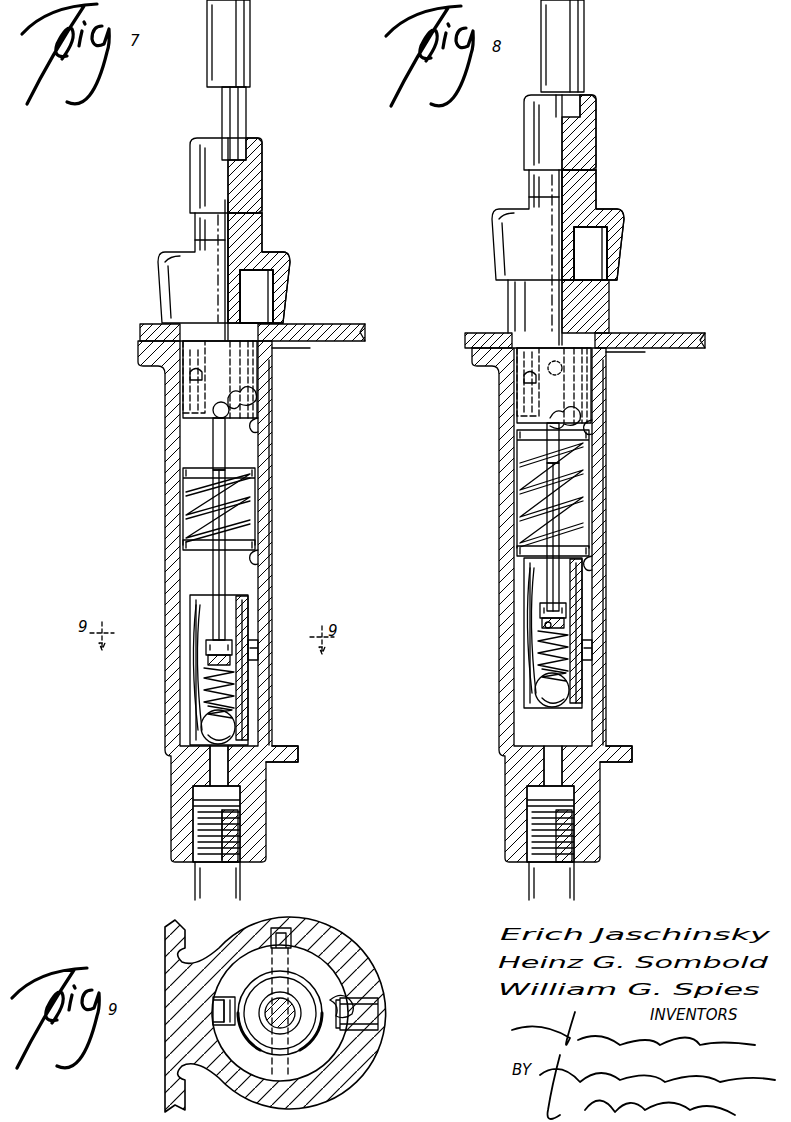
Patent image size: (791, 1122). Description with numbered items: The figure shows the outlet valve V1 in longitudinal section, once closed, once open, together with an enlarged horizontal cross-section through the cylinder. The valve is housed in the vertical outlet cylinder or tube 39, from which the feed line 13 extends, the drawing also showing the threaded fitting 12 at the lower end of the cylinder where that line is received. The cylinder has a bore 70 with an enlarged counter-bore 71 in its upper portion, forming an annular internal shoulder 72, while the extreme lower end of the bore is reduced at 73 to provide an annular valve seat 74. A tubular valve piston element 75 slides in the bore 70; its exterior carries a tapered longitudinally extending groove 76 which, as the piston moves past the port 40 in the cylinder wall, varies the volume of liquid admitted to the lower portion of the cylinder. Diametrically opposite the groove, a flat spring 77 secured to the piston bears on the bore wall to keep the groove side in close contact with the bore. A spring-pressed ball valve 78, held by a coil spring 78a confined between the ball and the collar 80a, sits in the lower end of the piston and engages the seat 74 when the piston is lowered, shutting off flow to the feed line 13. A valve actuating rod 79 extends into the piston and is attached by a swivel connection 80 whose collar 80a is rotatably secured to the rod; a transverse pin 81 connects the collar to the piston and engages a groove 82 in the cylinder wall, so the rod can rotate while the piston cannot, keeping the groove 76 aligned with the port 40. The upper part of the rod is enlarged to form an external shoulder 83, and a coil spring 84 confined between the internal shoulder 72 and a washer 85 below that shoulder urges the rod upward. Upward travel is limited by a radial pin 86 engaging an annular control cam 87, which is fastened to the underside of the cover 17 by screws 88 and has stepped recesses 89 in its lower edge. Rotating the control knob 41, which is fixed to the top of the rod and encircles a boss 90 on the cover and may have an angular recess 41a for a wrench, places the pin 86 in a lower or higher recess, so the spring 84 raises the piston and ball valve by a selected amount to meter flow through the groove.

In FIG. 7, the threaded fitting 12 is at (193, 815).
In FIG. 8, the threaded fitting 12 is at (575, 815).
In FIG. 7, the feed line 13 is at (195, 872).
In FIG. 8, the feed line 13 is at (575, 885).
In FIG. 7, the cover 17 is at (348, 324).
In FIG. 8, the cover 17 is at (700, 340).
In FIG. 7, the outlet cylinder or tube 39 is at (262, 488).
In FIG. 8, the outlet cylinder or tube 39 is at (606, 460).
In FIG. 9, the outlet cylinder or tube 39 is at (355, 1062).
In FIG. 7, the port 40 is at (258, 660).
In FIG. 8, the port 40 is at (600, 650).
In FIG. 9, the port 40 is at (372, 1018).
In FIG. 7, the control knob 41 is at (258, 245).
In FIG. 8, the control knob 41 is at (618, 230).
In FIG. 7, the angular recess 41a is at (245, 170).
In FIG. 8, the angular recess 41a is at (560, 132).
In FIG. 7, the bore 70 is at (252, 566).
In FIG. 8, the bore 70 is at (592, 568).
In FIG. 7, the counter-bore 71 is at (258, 426).
In FIG. 8, the counter-bore 71 is at (594, 418).
In FIG. 7, the annular internal shoulder 72 is at (256, 550).
In FIG. 8, the annular internal shoulder 72 is at (590, 556).
In FIG. 7, the reduced lower end of bore 73 is at (210, 770).
In FIG. 8, the reduced lower end of bore 73 is at (544, 780).
In FIG. 7, the annular valve seat 74 is at (266, 752).
In FIG. 8, the annular valve seat 74 is at (592, 752).
In FIG. 7, the tubular valve piston element 75 is at (242, 605).
In FIG. 8, the tubular valve piston element 75 is at (553, 633).
In FIG. 9, the tubular valve piston element 75 is at (302, 998).
In FIG. 7, the tapered longitudinally extending groove 76 is at (248, 692).
In FIG. 8, the tapered longitudinally extending groove 76 is at (582, 630).
In FIG. 9, the tapered longitudinally extending groove 76 is at (352, 1004).
In FIG. 7, the flat spring 77 is at (196, 635).
In FIG. 8, the flat spring 77 is at (524, 605).
In FIG. 7, the ball valve 78 is at (202, 726).
In FIG. 8, the ball valve 78 is at (560, 712).
In FIG. 7, the coil spring 78a is at (240, 712).
In FIG. 8, the coil spring 78a is at (585, 690).
In FIG. 7, the valve actuating rod 79 is at (213, 565).
In FIG. 8, the valve actuating rod 79 is at (562, 605).
In FIG. 9, the valve actuating rod 79 is at (292, 1004).
In FIG. 7, the swivel connection 80 is at (212, 682).
In FIG. 8, the swivel connection 80 is at (569, 629).
In FIG. 7, the collar 80a is at (208, 662).
In FIG. 8, the collar 80a is at (540, 620).
In FIG. 7, the transverse pin 81 is at (226, 640).
In FIG. 8, the transverse pin 81 is at (545, 625).
In FIG. 9, the transverse pin 81 is at (300, 945).
In FIG. 9, the groove 82 is at (282, 928).
In FIG. 7, the external shoulder 83 is at (224, 460).
In FIG. 8, the external shoulder 83 is at (553, 443).
In FIG. 7, the coil spring 84 is at (192, 492).
In FIG. 8, the coil spring 84 is at (592, 480).
In FIG. 7, the washer 85 is at (254, 470).
In FIG. 8, the washer 85 is at (592, 440).
In FIG. 7, the radial pin 86 is at (230, 410).
In FIG. 7, the annular control cam 87 is at (272, 362).
In FIG. 8, the annular control cam 87 is at (600, 362).
In FIG. 7, the screws 88 is at (158, 378).
In FIG. 7, the stepped recesses 89 is at (248, 395).
In FIG. 8, the stepped recesses 89 is at (592, 388).
In FIG. 7, the boss 90 is at (272, 282).
In FIG. 8, the boss 90 is at (608, 300).
In FIG. 7, the outlet valve V1 is at (279, 522).
In FIG. 8, the outlet valve V1 is at (617, 513).